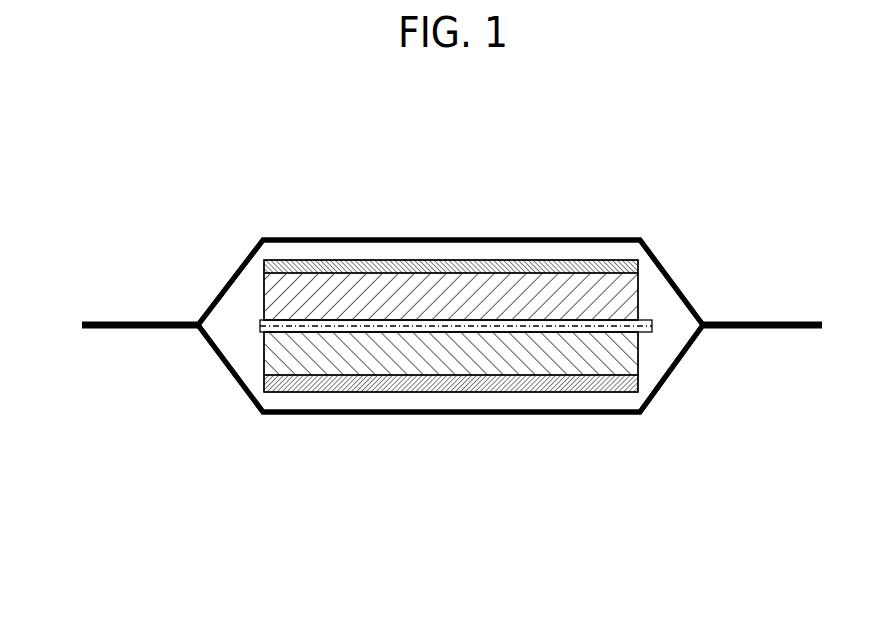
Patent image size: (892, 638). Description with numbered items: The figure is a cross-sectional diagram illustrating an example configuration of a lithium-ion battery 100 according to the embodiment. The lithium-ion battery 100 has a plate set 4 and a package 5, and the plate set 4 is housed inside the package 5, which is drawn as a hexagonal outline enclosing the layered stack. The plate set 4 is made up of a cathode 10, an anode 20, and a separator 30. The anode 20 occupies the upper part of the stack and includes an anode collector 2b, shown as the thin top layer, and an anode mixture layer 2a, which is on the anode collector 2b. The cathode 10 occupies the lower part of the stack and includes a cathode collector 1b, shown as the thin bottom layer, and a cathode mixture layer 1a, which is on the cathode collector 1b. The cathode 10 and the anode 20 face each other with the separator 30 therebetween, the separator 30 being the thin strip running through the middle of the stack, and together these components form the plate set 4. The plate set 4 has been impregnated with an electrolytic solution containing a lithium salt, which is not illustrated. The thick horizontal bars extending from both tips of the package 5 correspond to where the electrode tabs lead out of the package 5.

The lithium-ion battery 100 is at (630, 163).
The plate set 4 is at (648, 292).
The package 5 is at (145, 330).
The anode 20 is at (492, 143).
The anode mixture layer 2a is at (409, 297).
The anode collector 2b is at (480, 267).
The separator 30 is at (557, 328).
The cathode 10 is at (495, 503).
The cathode mixture layer 1a is at (411, 357).
The cathode collector 1b is at (480, 382).